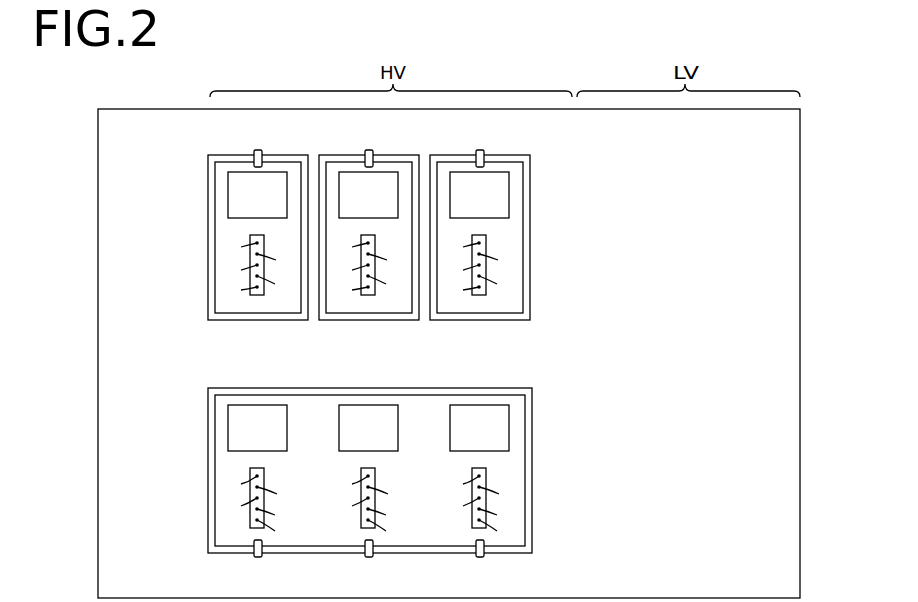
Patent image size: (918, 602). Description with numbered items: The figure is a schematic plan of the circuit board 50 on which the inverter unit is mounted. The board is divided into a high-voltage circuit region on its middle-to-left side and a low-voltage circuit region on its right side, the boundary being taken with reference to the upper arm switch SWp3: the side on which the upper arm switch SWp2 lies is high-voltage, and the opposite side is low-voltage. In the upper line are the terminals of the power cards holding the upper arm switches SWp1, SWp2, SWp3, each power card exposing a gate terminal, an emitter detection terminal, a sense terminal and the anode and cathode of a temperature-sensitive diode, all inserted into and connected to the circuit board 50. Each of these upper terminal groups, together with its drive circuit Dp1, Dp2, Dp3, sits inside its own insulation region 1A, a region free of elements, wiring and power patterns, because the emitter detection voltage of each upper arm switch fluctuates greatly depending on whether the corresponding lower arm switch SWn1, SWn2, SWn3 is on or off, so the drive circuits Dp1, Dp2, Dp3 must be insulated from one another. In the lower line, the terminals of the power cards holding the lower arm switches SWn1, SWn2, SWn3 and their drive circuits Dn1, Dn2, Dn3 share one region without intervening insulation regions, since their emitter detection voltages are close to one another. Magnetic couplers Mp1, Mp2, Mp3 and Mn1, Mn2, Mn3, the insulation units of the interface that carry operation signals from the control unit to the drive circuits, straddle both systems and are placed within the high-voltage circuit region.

The circuit board 50 is at (123, 109).
The insulation region 1A is at (506, 233).
The magnetic coupler Mp1 is at (254, 152).
The magnetic coupler Mp2 is at (348, 144).
The magnetic coupler Mp3 is at (459, 144).
The drive circuit Dp1 is at (274, 170).
The drive circuit Dp2 is at (377, 172).
The drive circuit Dp3 is at (488, 172).
The upper arm switch SWp1 is at (257, 295).
The upper arm switch SWp2 is at (367, 292).
The upper arm switch SWp3 is at (478, 292).
The drive circuit Dn1 is at (256, 405).
The drive circuit Dn2 is at (368, 405).
The drive circuit Dn3 is at (479, 405).
The lower arm switch SWn1 is at (251, 520).
The lower arm switch SWn2 is at (362, 525).
The lower arm switch SWn3 is at (473, 525).
The magnetic coupler Mn1 is at (258, 557).
The magnetic coupler Mn2 is at (389, 567).
The magnetic coupler Mn3 is at (500, 567).